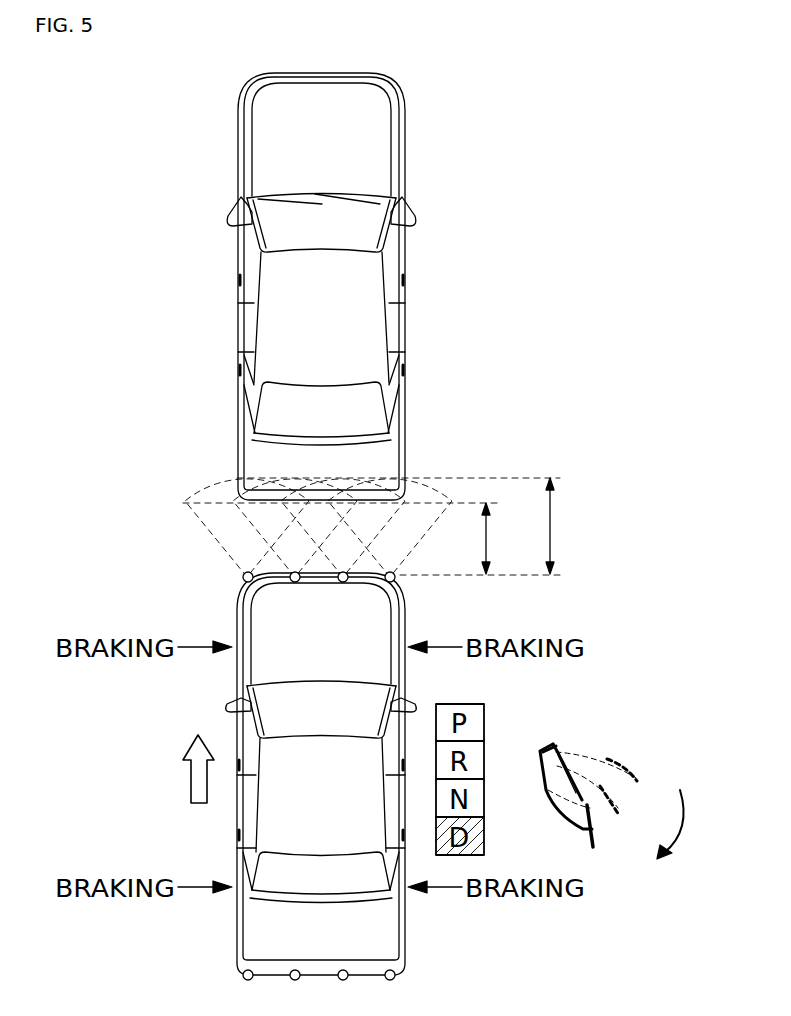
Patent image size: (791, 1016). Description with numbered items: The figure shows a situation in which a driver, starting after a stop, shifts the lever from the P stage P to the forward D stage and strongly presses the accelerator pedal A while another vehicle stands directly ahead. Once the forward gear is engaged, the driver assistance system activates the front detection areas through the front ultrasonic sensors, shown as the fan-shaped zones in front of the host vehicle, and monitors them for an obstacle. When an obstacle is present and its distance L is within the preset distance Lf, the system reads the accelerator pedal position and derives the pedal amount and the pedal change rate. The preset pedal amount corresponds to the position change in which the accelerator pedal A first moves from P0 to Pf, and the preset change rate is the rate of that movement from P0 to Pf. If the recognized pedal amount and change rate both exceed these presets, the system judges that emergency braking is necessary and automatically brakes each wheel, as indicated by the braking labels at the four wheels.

The accelerator pedal A is at (565, 754).
The P stage P is at (601, 836).
The accelerator pedal initial position P0 is at (641, 779).
The accelerator pedal moved position Pf is at (627, 813).
The distance of the obstacle L is at (495, 538).
The preset distance Lf is at (564, 526).